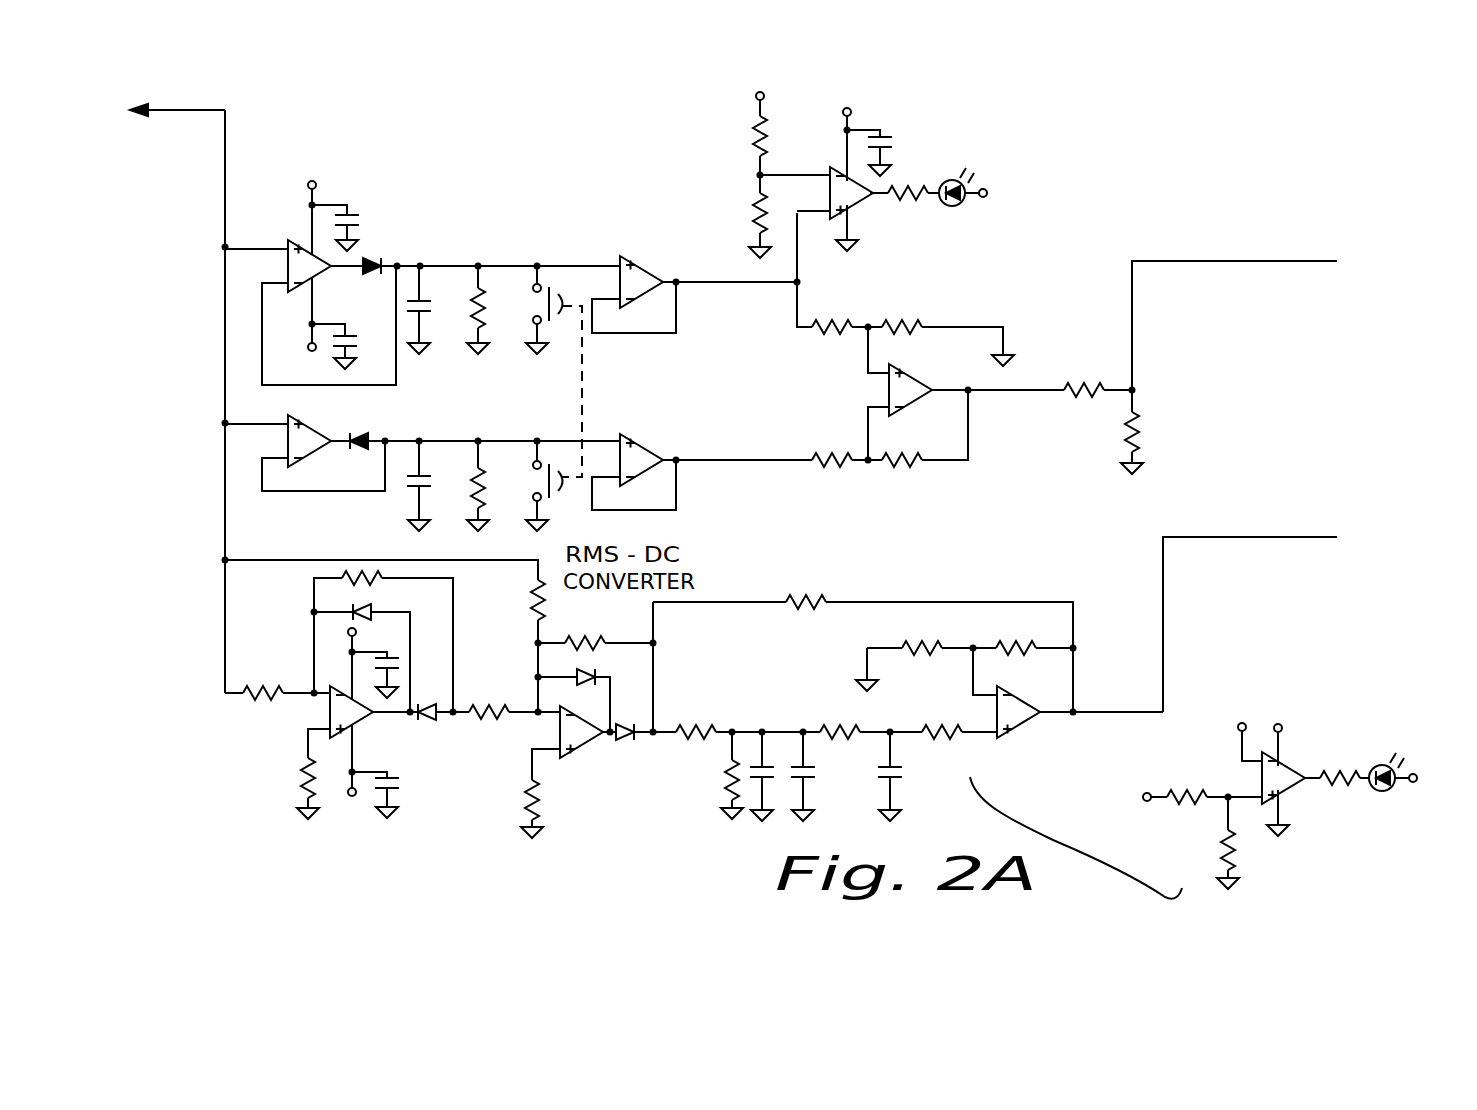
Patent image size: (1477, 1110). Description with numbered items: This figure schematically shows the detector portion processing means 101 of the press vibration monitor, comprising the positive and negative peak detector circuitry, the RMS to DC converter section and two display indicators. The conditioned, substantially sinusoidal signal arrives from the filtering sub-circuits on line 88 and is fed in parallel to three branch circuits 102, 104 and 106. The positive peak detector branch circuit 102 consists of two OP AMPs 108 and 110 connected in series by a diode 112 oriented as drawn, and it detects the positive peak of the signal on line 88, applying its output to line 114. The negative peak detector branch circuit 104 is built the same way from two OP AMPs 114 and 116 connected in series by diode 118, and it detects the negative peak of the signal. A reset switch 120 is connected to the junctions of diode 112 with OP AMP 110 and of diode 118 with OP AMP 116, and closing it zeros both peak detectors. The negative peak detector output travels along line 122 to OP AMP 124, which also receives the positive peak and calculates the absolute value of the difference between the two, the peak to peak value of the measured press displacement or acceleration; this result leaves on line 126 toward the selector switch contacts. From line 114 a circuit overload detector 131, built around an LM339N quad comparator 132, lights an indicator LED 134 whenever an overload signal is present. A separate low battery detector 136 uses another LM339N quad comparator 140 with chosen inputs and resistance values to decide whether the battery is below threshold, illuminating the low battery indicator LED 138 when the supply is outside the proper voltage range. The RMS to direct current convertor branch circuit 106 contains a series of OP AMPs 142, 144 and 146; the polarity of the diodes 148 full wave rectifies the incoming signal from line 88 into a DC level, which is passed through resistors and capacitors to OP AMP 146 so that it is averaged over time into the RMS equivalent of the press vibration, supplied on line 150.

The line 88 is at (192, 110).
The detector portion processing means 101 is at (208, 439).
The positive peak detector branch circuit 102 is at (553, 252).
The negative peak detector branch circuit 104 is at (547, 454).
The RMS to direct current convertor branch circuit 106 is at (250, 719).
The OP AMP 108 is at (303, 250).
The OP AMP 110 is at (640, 270).
The diode 112 is at (373, 257).
The line / OP AMP 114 is at (710, 285).
The OP AMP 116 is at (640, 448).
The diode 118 is at (360, 449).
The reset switch 120 is at (583, 378).
The line 122 is at (782, 458).
The OP AMP 124 is at (912, 378).
The line 126 is at (1257, 260).
The circuit overload detector 131 is at (944, 173).
The quad comparator 132 is at (850, 203).
The indicator LED 134 is at (953, 207).
The low battery detector 136 is at (1301, 775).
The low battery indicator LED 138 is at (1387, 795).
The quad comparator 140 is at (1288, 788).
The OP AMP 142 is at (357, 722).
The OP AMP 144 is at (582, 740).
The OP AMP 146 is at (1015, 727).
The diodes 148 is at (363, 607).
The line 150 is at (1268, 537).